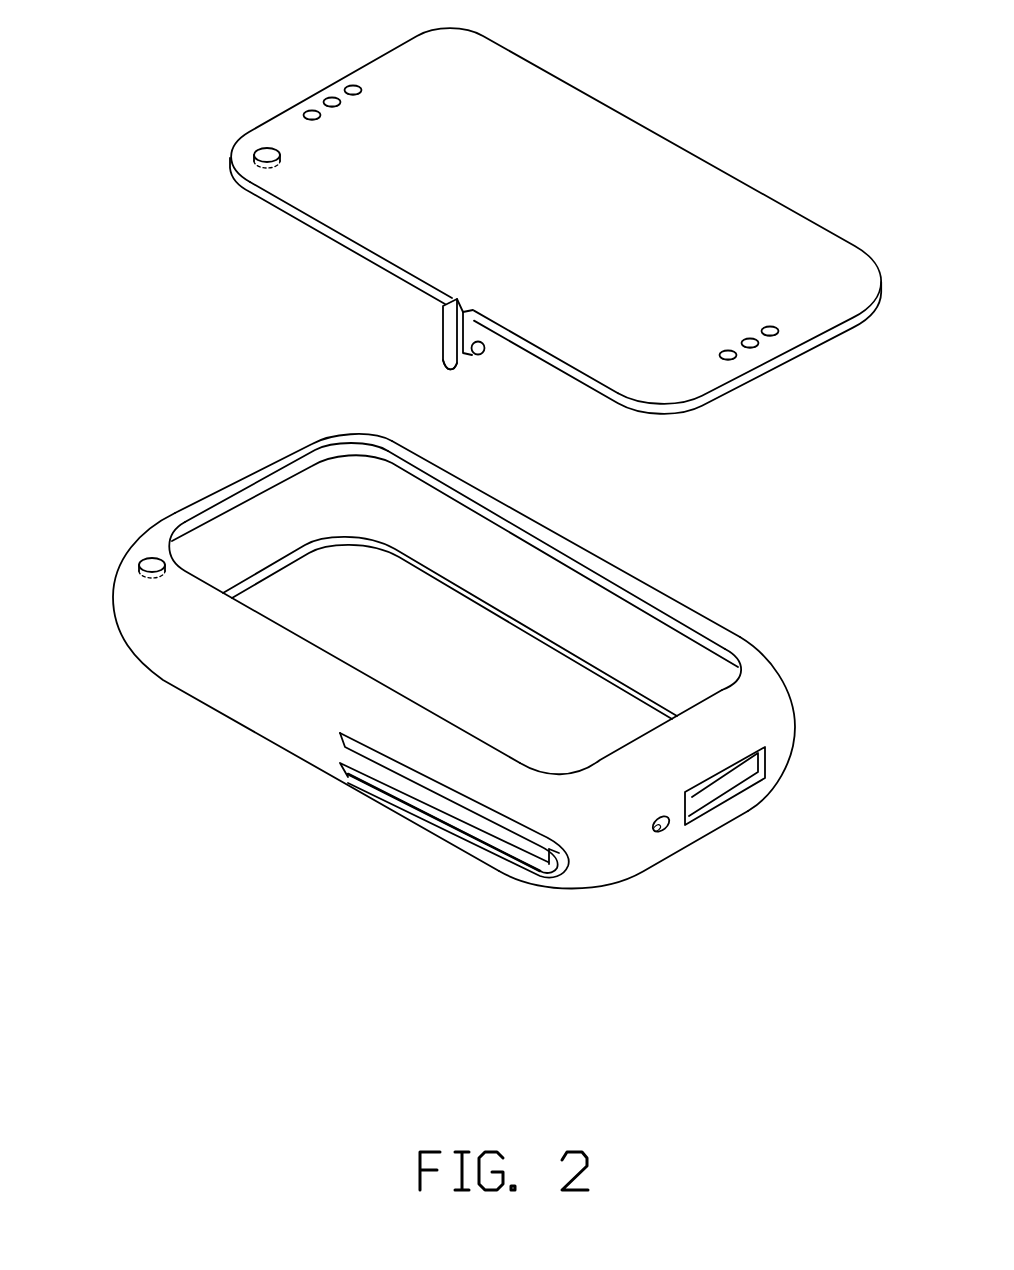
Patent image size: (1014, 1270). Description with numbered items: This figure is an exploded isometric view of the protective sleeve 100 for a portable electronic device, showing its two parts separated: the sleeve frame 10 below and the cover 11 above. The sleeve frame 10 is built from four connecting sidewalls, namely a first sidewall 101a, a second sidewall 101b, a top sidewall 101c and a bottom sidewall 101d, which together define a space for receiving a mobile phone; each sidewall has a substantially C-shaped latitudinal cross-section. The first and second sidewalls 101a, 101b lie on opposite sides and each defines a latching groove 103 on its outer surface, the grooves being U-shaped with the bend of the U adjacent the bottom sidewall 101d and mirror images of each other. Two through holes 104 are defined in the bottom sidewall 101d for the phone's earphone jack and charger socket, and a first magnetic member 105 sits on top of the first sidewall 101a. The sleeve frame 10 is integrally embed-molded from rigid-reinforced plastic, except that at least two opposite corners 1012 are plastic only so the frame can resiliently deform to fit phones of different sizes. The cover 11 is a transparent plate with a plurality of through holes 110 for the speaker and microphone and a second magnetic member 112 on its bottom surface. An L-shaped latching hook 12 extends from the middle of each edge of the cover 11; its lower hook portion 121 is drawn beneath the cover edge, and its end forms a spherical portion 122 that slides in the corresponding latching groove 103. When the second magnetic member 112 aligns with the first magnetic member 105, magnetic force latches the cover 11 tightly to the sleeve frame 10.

The protective sleeve 100 is at (229, 87).
The cover 11 is at (572, 115).
The through holes 110 is at (752, 347).
The second magnetic member 112 is at (260, 152).
The latching hook 12 is at (447, 333).
The hook portion of tab 121 is at (471, 357).
The spherical portion 122 is at (484, 354).
The sleeve frame 10 is at (216, 441).
The first sidewall 101a is at (210, 658).
The second sidewall 101b is at (580, 562).
The top sidewall 101c is at (277, 458).
The bottom sidewall 101d is at (614, 848).
The corners 1012 is at (770, 695).
The latching groove 103 is at (562, 865).
The through holes 104 is at (712, 787).
The first magnetic member 105 is at (149, 562).